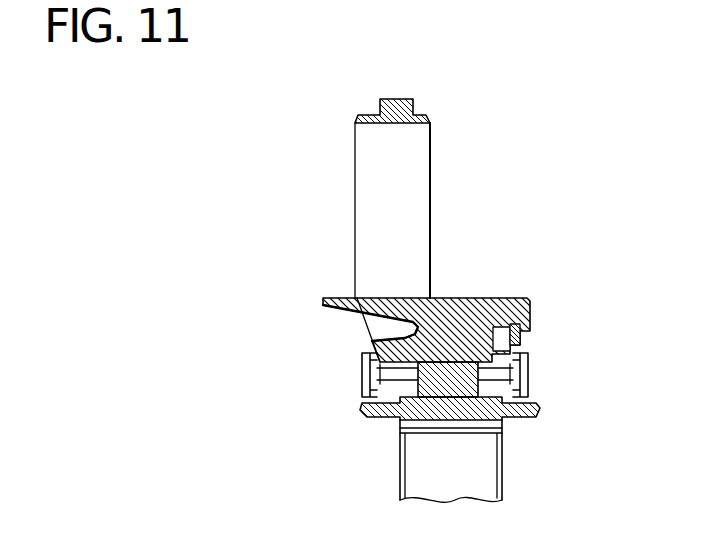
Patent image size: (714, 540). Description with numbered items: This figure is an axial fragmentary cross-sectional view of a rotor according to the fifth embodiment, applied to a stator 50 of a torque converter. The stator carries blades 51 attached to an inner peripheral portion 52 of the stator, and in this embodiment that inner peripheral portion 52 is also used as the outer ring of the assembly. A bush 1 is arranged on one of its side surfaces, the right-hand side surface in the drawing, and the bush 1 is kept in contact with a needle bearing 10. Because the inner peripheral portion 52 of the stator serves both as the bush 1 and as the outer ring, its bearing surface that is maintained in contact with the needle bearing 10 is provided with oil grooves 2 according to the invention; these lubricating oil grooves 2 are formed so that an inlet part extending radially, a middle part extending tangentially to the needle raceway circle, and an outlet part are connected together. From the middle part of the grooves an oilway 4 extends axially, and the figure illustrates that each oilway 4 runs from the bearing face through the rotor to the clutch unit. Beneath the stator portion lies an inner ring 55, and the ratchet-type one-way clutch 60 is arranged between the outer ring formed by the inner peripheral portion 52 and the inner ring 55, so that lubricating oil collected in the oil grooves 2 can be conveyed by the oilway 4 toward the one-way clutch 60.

The stator 50 is at (424, 231).
The blades 51 is at (417, 185).
The inner peripheral portion of the stator 52 is at (470, 315).
The ratchet-type one-way clutch 60 is at (385, 331).
The bush 1 is at (532, 331).
The needle bearing 10 is at (469, 422).
The oil grooves 2 is at (363, 380).
The oilway 4 is at (378, 406).
The inner ring 55 is at (446, 422).